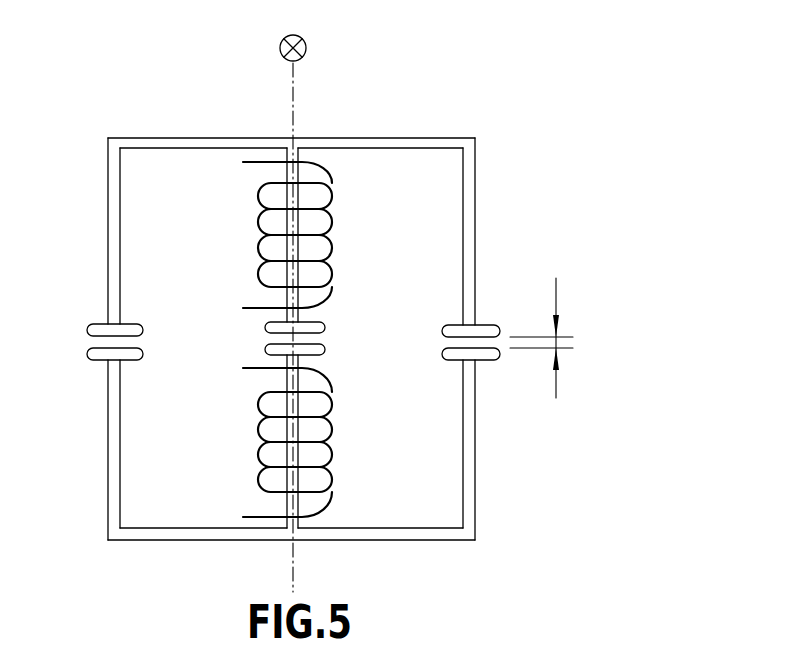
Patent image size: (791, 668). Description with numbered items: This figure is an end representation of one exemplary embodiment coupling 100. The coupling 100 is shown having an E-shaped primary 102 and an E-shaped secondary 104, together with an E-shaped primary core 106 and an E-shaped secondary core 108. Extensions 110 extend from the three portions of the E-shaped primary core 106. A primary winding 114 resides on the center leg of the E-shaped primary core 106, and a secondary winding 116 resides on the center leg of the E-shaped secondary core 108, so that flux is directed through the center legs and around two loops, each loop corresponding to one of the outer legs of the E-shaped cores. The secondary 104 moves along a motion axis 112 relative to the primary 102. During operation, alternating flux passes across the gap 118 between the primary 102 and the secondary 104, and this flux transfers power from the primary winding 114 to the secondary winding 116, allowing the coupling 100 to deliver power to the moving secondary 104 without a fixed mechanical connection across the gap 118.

The coupling 100 is at (654, 198).
The E-shaped primary 102 is at (475, 448).
The E-shaped secondary 104 is at (522, 160).
The E-shaped primary core 106 is at (420, 542).
The E-shaped secondary core 108 is at (395, 138).
The extensions 110 is at (107, 358).
The motion axis 112 is at (300, 37).
The primary winding 114 is at (260, 424).
The secondary winding 116 is at (258, 252).
The gap 118 is at (556, 303).